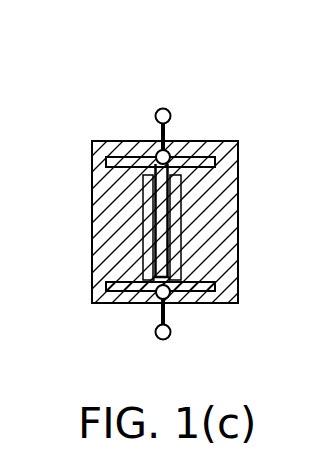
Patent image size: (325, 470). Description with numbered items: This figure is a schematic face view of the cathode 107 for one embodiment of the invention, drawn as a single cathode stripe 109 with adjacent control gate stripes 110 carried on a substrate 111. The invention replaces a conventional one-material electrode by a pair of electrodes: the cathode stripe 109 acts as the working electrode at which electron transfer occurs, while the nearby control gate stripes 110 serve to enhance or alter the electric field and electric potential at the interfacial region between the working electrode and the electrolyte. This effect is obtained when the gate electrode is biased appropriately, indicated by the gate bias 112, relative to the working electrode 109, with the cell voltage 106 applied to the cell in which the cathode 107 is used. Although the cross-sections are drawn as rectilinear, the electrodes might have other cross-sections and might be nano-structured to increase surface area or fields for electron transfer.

The cathode 107 is at (162, 203).
The cell voltage 106 is at (166, 109).
The substrate 111 is at (208, 140).
The cathode stripe 109 is at (156, 199).
The control gate stripes 110 is at (143, 254).
The gate bias 112 is at (159, 339).